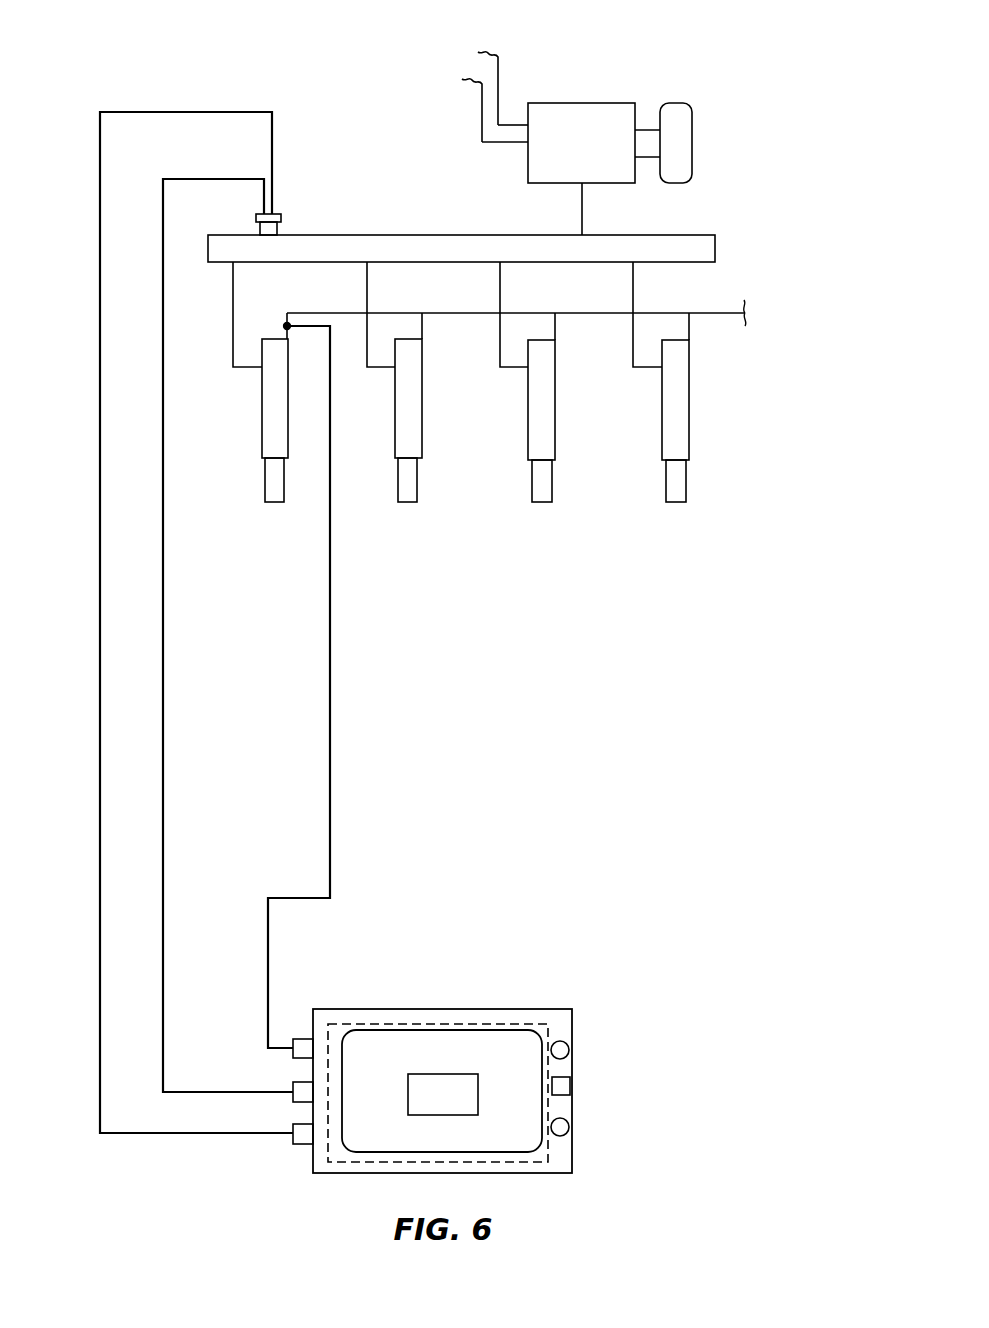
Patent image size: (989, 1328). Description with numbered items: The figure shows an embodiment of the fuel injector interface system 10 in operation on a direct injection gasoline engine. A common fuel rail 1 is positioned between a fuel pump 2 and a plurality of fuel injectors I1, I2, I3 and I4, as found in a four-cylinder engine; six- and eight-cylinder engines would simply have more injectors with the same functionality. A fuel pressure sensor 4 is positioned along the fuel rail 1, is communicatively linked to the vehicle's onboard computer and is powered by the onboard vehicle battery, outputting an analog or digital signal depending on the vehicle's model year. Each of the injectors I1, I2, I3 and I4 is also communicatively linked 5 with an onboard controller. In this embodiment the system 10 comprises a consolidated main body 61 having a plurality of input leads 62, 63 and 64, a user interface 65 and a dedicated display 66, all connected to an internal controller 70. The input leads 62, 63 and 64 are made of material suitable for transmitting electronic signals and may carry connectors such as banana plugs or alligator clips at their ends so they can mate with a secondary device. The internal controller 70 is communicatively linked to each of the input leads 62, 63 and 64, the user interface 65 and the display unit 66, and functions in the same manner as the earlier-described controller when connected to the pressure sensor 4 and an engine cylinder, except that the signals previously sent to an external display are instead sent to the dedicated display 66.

The system 10 is at (120, 69).
The common fuel rail 1 is at (446, 248).
The fuel pump 2 is at (572, 153).
The fuel pressure sensor 4 is at (283, 226).
The communicative link 5 is at (713, 317).
The fuel injector I1 is at (262, 422).
The fuel injector I2 is at (422, 432).
The fuel injector I3 is at (555, 432).
The fuel injector I4 is at (689, 432).
The input lead 62 is at (97, 540).
The input lead 63 is at (164, 539).
The input lead 64 is at (331, 797).
The consolidated main body 61 is at (494, 1009).
The internal controller 70 is at (413, 1024).
The dedicated display 66 is at (431, 1106).
The user interface 65 is at (567, 1120).